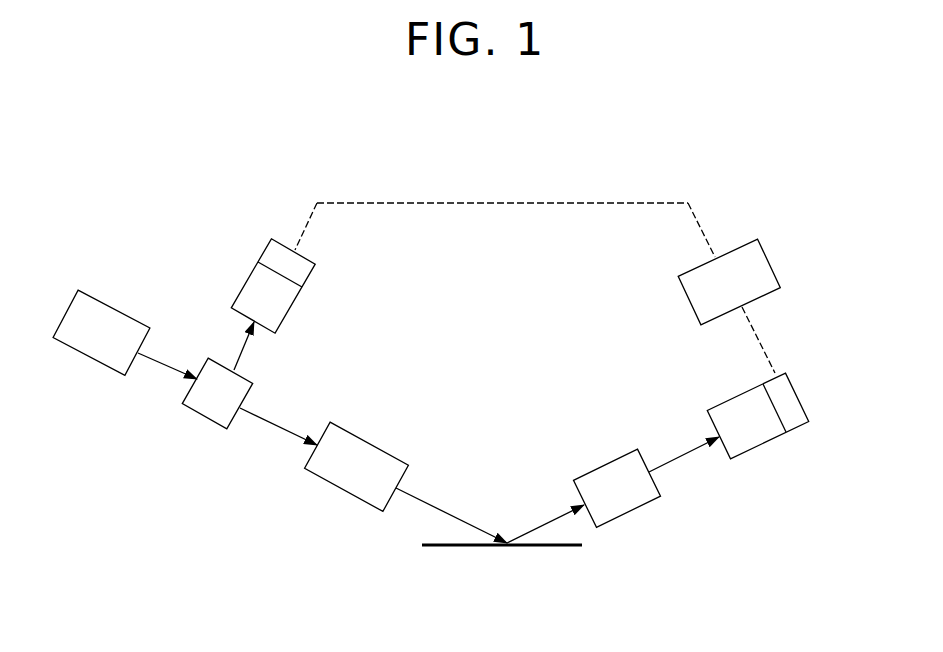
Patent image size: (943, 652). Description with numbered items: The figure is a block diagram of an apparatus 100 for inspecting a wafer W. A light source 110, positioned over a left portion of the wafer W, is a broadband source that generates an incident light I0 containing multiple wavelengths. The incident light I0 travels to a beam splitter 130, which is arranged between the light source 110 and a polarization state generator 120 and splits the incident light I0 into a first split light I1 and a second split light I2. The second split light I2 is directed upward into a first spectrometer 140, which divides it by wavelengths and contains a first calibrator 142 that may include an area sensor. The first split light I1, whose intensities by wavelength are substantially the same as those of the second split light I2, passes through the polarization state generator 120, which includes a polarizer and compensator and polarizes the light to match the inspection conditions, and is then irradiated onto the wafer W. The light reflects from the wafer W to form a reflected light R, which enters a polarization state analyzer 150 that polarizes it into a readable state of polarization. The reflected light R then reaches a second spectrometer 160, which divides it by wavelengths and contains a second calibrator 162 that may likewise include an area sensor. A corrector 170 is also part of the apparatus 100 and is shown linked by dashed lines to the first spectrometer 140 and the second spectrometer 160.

The apparatus for inspecting a wafer 100 is at (497, 176).
The light source 110 is at (88, 359).
The polarization state generator 120 is at (333, 489).
The beam splitter 130 is at (203, 419).
The first spectrometer 140 is at (252, 292).
The first calibrator 142 is at (270, 251).
The polarization state analyzer 150 is at (645, 504).
The second spectrometer 160 is at (753, 436).
The second calibrator 162 is at (802, 421).
The corrector 170 is at (688, 299).
The incident light I0 is at (153, 363).
The first split light I1 is at (275, 429).
The second split light I2 is at (240, 355).
The reflected light R is at (542, 525).
The wafer W is at (535, 548).